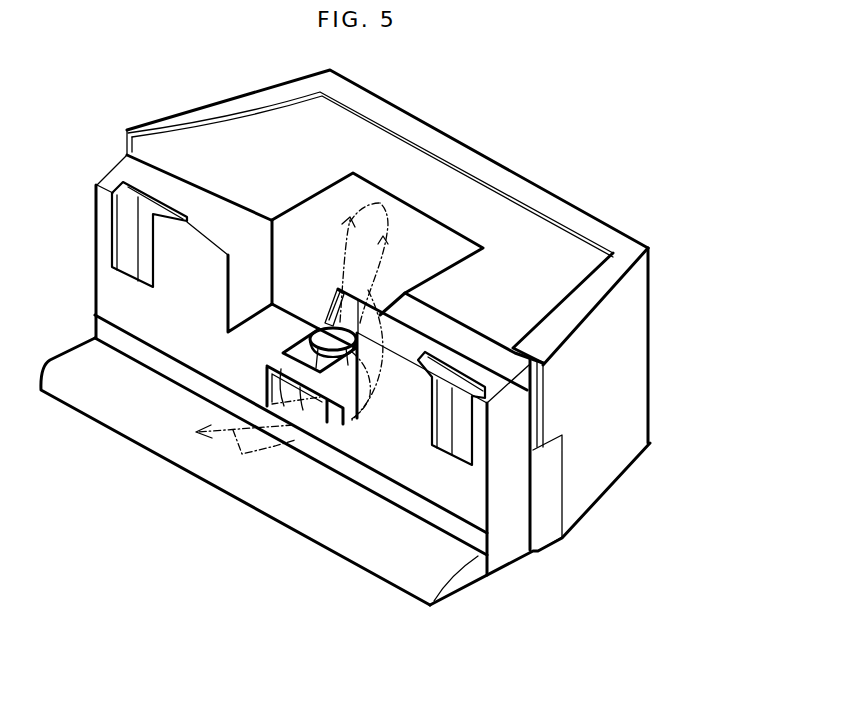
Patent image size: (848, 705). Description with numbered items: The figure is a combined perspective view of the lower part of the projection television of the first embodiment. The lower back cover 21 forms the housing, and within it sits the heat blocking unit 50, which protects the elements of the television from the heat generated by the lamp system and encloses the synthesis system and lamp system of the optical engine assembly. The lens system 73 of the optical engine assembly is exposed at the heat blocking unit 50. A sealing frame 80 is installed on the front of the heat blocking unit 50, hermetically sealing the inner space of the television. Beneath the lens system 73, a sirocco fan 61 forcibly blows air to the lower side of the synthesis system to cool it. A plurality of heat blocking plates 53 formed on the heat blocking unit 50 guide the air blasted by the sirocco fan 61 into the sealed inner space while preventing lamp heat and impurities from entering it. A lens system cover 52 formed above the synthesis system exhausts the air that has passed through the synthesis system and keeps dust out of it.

The lower back cover 21 is at (617, 230).
The heat blocking unit 50 is at (531, 266).
The lens system cover 52 is at (325, 313).
The heat blocking plates 53 is at (325, 326).
The sirocco fan 61 is at (345, 392).
The lens system 73 is at (359, 415).
The sealing frame 80 is at (465, 497).